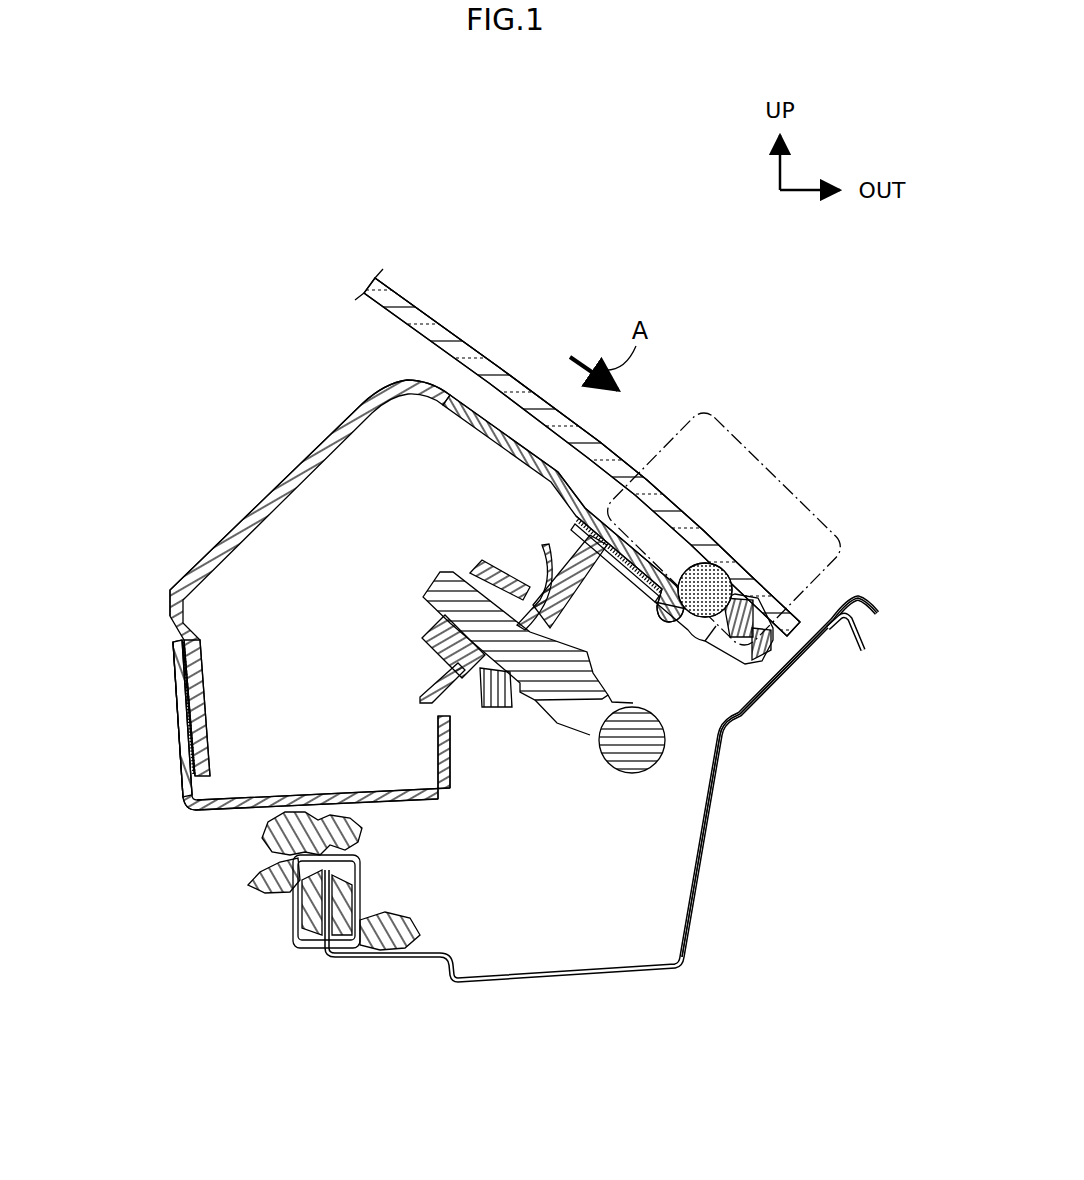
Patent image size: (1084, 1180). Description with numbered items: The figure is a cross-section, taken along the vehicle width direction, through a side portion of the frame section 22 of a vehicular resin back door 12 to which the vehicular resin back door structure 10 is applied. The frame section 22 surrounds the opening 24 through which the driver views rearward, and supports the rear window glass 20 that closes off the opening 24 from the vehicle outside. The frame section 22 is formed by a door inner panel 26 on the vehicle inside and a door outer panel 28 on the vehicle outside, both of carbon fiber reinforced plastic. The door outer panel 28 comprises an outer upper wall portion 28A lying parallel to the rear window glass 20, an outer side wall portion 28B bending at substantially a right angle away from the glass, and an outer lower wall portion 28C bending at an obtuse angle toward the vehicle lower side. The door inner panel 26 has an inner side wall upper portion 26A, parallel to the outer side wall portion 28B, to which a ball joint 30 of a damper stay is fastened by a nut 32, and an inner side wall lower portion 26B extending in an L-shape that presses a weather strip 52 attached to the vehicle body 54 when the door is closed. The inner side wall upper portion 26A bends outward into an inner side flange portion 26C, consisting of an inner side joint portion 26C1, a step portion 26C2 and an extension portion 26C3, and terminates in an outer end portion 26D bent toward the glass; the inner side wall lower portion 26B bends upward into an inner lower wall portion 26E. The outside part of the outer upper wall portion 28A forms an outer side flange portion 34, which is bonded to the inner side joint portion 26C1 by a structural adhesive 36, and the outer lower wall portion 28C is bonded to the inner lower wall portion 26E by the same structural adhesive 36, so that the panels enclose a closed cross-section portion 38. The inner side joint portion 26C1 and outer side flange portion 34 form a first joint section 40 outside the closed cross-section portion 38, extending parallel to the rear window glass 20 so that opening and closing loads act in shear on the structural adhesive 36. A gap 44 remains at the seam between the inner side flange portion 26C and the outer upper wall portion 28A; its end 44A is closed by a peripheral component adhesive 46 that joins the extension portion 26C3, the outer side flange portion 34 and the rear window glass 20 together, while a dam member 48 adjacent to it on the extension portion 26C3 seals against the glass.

The vehicular resin back door structure 10 is at (492, 244).
The vehicular resin back door 12 is at (603, 326).
The rear window glass 20 is at (492, 358).
The frame section 22 is at (294, 464).
The opening 24 is at (119, 442).
The door inner panel 26 is at (184, 815).
The inner side wall upper portion 26A is at (470, 730).
The inner side wall lower portion 26B is at (405, 806).
The inner side flange portion 26C is at (930, 840).
The inner side joint portion 26C1 is at (668, 633).
The step portion 26C2 is at (692, 623).
The extension portion 26C3 is at (765, 660).
The outer end portion 26D is at (788, 665).
The inner lower wall portion 26E is at (182, 782).
The door outer panel 28 is at (181, 571).
The outer upper wall portion 28A is at (458, 400).
The outer side wall portion 28B is at (360, 403).
The outer lower wall portion 28C is at (205, 667).
The ball joint 30 is at (573, 723).
The nut 32 is at (483, 553).
The outer side flange portion 34 is at (653, 552).
The structural adhesive 36 is at (632, 592).
The closed cross-section portion 38 is at (329, 590).
The first joint section 40 is at (745, 440).
The end of the gap 44A is at (700, 565).
The gap 44 is at (705, 590).
The peripheral component adhesive 46 is at (745, 590).
The dam member 48 is at (767, 592).
The weather strip 52 is at (262, 840).
The vehicle body 54 is at (607, 975).